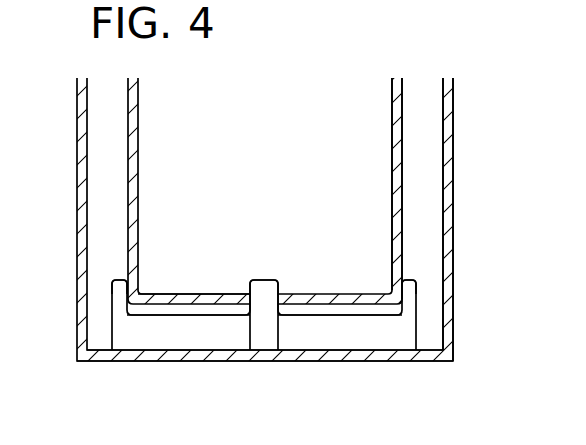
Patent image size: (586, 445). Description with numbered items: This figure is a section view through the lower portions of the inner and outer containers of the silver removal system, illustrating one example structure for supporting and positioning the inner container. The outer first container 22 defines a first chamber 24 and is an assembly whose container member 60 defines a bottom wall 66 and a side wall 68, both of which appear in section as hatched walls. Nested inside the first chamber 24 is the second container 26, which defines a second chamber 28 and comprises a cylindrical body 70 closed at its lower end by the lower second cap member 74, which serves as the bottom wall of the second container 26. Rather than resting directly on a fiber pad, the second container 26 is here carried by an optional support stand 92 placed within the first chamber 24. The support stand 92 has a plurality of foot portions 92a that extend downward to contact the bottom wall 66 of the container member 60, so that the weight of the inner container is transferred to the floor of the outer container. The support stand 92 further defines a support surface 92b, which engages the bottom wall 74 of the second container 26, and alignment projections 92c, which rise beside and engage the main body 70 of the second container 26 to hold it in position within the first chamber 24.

The first container 22 is at (459, 95).
The first chamber 24 is at (425, 122).
The second container 26 is at (414, 147).
The second chamber 28 is at (371, 177).
The container member 60 is at (458, 198).
The bottom wall 66 is at (380, 355).
The side wall 68 is at (447, 225).
The cylindrical body 70 is at (398, 248).
The lower second cap member 74 is at (318, 300).
The support stand 92 is at (103, 325).
The foot portions 92a is at (118, 340).
The support surface 92b is at (198, 300).
The alignment projections 92c is at (120, 290).